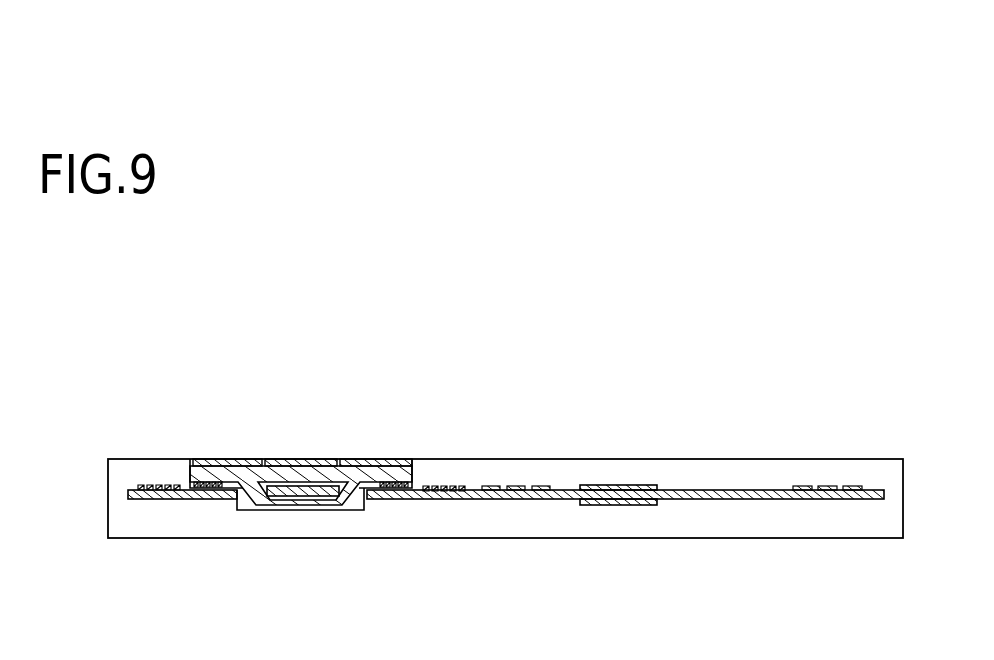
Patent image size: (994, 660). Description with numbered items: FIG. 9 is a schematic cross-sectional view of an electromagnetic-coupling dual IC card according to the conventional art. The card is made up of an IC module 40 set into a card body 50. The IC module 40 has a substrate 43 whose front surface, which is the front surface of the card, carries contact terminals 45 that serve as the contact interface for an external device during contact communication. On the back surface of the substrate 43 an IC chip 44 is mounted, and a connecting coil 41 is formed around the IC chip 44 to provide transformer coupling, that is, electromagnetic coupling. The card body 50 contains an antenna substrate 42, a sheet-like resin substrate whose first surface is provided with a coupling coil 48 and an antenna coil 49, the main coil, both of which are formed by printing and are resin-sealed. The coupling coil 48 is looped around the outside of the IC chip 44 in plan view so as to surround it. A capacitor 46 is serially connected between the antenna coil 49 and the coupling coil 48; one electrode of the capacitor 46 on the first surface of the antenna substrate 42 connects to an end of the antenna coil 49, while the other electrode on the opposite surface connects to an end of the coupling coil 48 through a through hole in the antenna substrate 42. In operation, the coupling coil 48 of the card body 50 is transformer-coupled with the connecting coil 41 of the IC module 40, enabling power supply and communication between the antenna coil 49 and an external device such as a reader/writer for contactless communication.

The IC module 40 is at (300, 458).
The connecting coil 41 is at (393, 499).
The antenna substrate 42 is at (743, 493).
The substrate 43 is at (377, 459).
The IC chip 44 is at (303, 497).
The contact terminals 45 is at (218, 459).
The capacitor 46 is at (582, 506).
The coupling coil 48 is at (158, 486).
The antenna coil 49 is at (517, 486).
The card body 50 is at (858, 460).